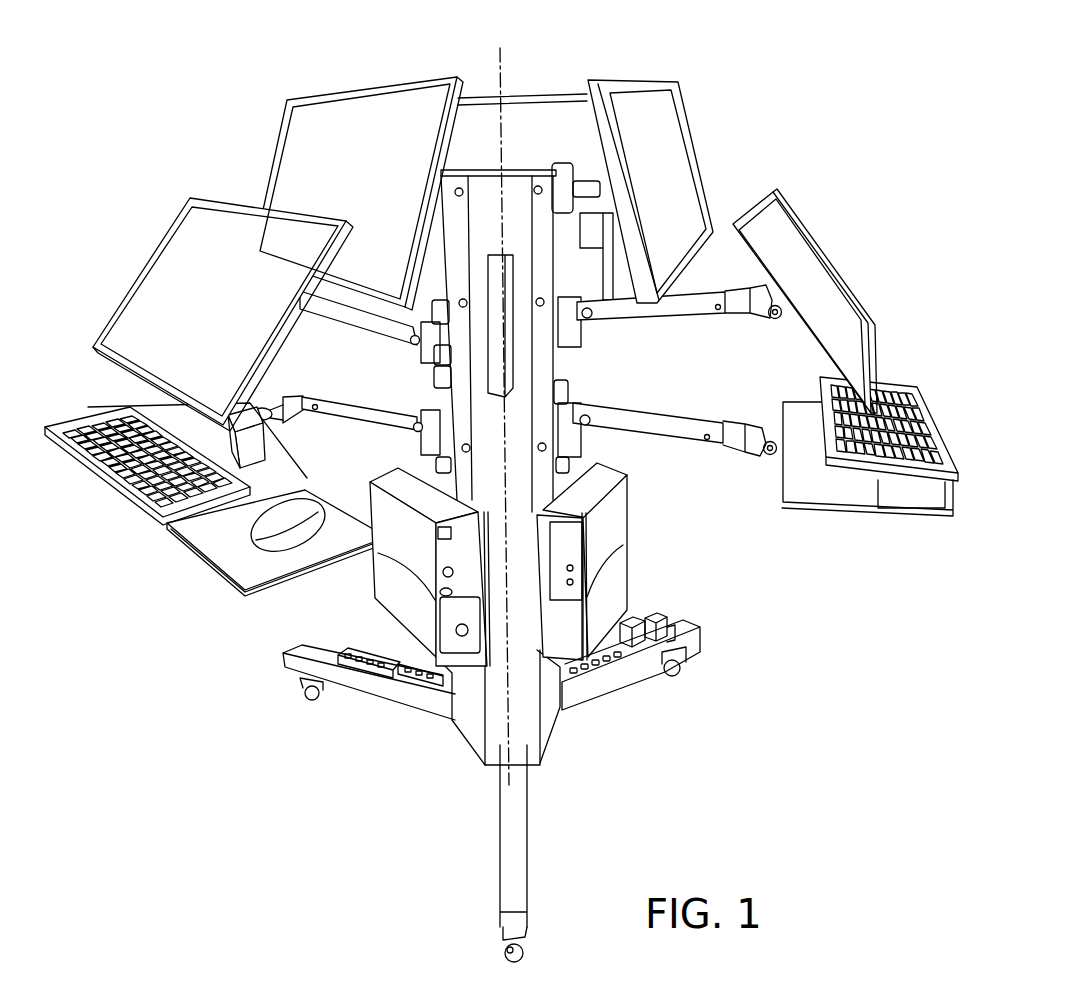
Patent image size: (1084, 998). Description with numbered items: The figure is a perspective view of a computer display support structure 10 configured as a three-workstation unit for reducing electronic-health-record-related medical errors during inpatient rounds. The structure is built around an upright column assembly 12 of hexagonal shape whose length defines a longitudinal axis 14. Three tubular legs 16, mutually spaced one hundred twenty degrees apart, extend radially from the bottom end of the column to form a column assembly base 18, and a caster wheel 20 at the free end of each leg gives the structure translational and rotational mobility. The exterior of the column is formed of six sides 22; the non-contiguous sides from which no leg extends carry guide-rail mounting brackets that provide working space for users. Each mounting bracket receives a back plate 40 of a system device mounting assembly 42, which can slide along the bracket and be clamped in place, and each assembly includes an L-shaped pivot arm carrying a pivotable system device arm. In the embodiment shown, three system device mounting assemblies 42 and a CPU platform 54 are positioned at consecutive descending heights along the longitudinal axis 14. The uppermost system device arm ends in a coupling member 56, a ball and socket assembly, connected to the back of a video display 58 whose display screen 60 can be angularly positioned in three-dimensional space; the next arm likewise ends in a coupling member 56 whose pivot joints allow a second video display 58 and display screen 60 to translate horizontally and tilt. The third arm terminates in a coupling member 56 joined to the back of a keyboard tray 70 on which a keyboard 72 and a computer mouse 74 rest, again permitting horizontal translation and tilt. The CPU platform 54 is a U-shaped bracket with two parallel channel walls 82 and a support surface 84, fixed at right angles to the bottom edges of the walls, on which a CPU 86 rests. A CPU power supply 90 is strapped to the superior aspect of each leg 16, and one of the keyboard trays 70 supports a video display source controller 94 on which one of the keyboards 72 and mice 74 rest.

The computer display support structure 10 is at (740, 627).
The upright column assembly 12 is at (479, 170).
The longitudinal axis 14 is at (500, 147).
The tubular legs 16 is at (292, 668).
The column assembly base 18 is at (445, 728).
The caster wheel 20 is at (313, 697).
The sides 22 is at (523, 172).
The back plate 40 is at (567, 192).
The system device mounting assembly 42 is at (602, 237).
The CPU platform 54 is at (380, 600).
The coupling member 56 is at (747, 310).
The video display 58 is at (318, 97).
The display screen 60 is at (372, 128).
The keyboard tray 70 is at (177, 420).
The keyboard 72 is at (95, 417).
The computer mouse 74 is at (300, 537).
The channel walls 82 is at (422, 480).
The support surface 84 is at (620, 613).
The CPU 86 is at (417, 541).
The CPU power supply 90 is at (392, 673).
The video display source controller 94 is at (902, 497).